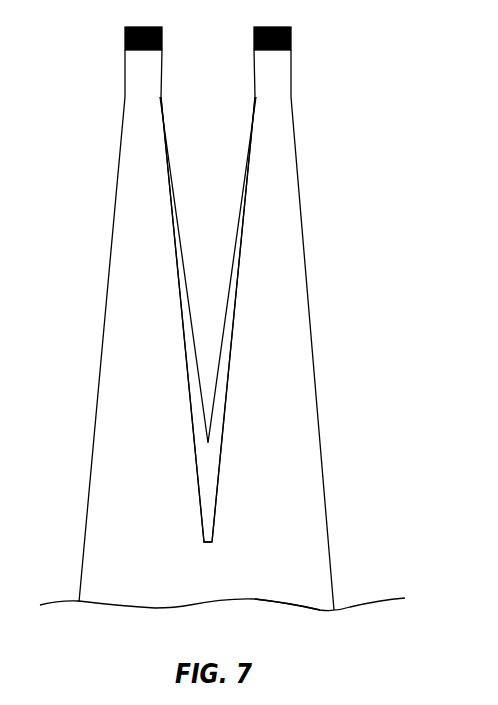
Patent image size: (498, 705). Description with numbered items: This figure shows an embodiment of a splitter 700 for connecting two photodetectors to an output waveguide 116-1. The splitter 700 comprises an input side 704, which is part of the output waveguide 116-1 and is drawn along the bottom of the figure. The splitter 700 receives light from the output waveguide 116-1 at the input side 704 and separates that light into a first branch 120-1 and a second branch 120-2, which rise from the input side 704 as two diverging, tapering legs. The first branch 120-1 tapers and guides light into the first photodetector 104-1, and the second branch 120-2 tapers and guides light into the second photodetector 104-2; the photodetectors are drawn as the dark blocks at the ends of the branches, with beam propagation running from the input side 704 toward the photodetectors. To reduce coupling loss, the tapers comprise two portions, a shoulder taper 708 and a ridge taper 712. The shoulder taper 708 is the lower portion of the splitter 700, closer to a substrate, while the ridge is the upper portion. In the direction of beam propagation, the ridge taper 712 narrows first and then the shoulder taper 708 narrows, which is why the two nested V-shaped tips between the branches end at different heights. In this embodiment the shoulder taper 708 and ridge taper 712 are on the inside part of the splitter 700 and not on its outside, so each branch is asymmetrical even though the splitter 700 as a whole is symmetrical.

The splitter 700 is at (338, 178).
The input side 704 is at (79, 601).
The shoulder taper 708 is at (212, 424).
The ridge taper 712 is at (218, 487).
The first photodetector 104-1 is at (290, 45).
The second photodetector 104-2 is at (126, 45).
The first branch 120-1 is at (307, 352).
The second branch 120-2 is at (138, 227).
The output waveguide 116-1 is at (213, 585).